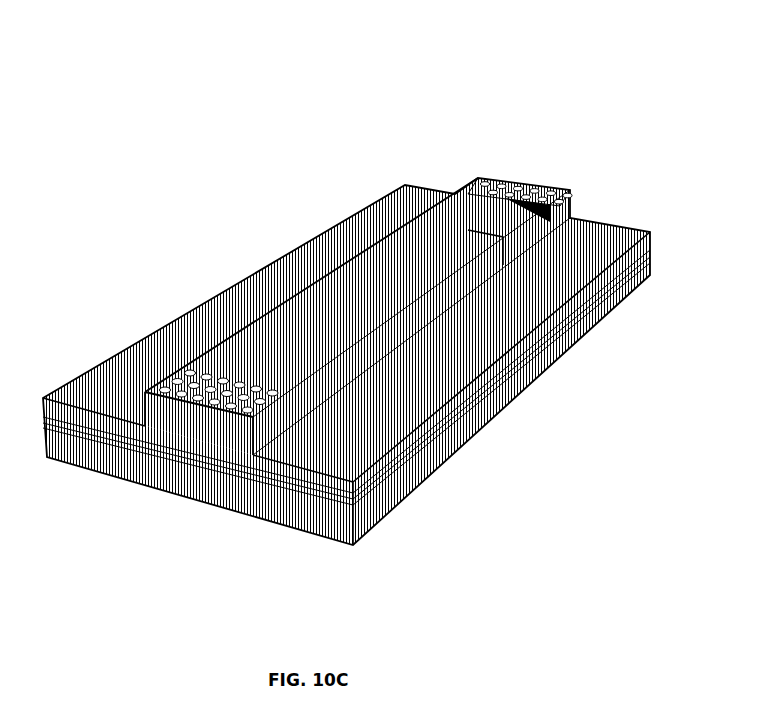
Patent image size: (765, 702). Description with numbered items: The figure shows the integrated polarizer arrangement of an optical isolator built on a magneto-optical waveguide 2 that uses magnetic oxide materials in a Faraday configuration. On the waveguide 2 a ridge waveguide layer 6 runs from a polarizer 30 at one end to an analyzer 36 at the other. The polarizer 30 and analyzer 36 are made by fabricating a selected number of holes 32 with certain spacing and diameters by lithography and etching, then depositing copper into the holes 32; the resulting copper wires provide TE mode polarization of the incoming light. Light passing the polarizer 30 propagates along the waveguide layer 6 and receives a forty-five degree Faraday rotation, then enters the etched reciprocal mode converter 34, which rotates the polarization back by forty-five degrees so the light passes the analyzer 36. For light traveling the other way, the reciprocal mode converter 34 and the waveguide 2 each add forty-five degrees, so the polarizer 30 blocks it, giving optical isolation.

The magneto-optical waveguide 2 is at (217, 193).
The ridge waveguide layer 6 is at (370, 285).
The polarizer 30 is at (235, 434).
The holes 32 is at (227, 382).
The reciprocal mode converter 34 is at (520, 270).
The analyzer 36 is at (568, 200).